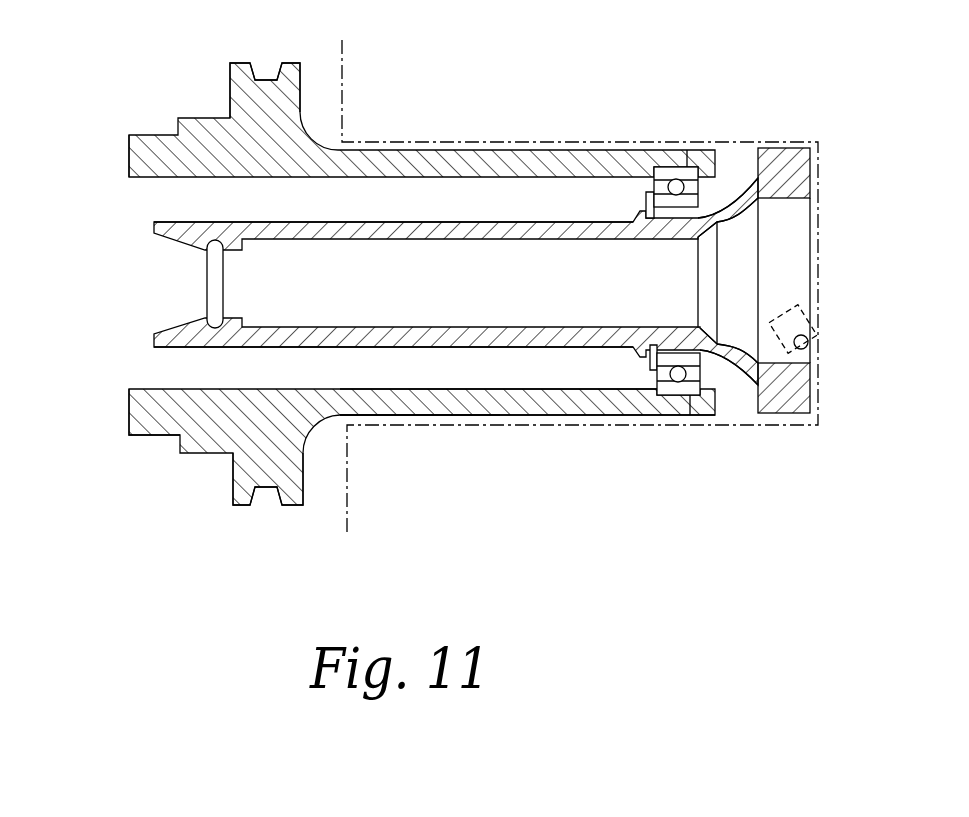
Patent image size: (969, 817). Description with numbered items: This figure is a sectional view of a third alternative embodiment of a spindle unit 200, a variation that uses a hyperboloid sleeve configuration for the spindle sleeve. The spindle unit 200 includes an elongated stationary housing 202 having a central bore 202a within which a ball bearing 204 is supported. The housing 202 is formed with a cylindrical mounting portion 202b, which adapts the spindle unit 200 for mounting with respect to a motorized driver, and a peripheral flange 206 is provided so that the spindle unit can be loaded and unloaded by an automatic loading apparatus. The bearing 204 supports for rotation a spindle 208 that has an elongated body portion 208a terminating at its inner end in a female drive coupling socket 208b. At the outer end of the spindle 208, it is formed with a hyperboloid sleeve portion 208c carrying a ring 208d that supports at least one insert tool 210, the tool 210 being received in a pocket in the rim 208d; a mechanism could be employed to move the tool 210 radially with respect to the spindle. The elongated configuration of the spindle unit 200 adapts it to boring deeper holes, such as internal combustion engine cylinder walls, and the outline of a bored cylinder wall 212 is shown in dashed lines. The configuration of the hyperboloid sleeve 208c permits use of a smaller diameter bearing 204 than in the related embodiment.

The spindle unit 200 is at (456, 113).
The stationary housing 202 is at (568, 163).
The central bore 202a is at (445, 378).
The cylindrical mounting portion 202b is at (160, 437).
The ball bearing 204 is at (657, 383).
The peripheral flange 206 is at (264, 488).
The spindle 208 is at (386, 344).
The elongated body portion 208a is at (476, 220).
The female drive coupling socket 208b is at (154, 260).
The hyperboloid sleeve portion 208c is at (757, 370).
The ring 208d is at (770, 147).
The insert tool 210 is at (812, 326).
The bored cylinder wall 212 is at (413, 411).